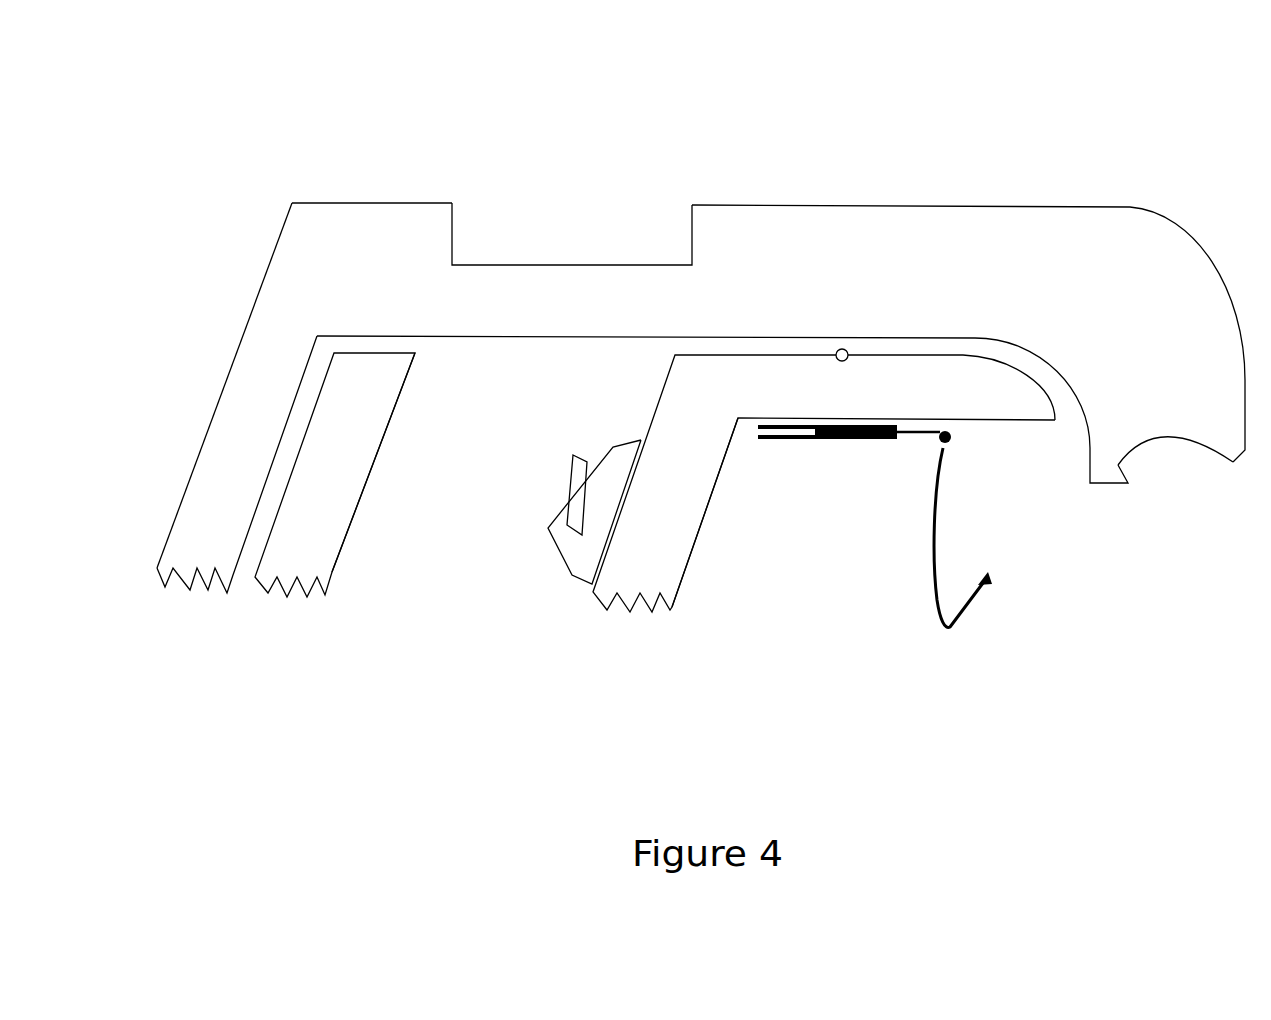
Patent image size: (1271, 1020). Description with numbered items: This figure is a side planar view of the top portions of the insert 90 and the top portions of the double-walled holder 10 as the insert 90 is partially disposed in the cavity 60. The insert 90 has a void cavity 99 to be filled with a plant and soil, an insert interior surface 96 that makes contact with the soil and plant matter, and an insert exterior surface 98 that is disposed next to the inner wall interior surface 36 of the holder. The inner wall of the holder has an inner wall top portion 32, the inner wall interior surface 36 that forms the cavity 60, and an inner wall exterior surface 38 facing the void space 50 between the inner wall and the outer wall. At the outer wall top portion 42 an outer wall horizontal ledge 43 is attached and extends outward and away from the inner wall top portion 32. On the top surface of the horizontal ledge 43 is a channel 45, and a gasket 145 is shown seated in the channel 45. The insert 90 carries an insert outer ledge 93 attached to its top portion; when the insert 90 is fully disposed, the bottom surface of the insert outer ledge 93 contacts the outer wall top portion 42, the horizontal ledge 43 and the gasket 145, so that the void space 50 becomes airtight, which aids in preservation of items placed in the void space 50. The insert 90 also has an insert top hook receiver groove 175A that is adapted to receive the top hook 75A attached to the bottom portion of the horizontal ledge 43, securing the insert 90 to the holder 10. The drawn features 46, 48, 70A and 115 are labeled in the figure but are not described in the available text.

The double-walled holder 10 is at (1055, 422).
The inner wall top portion 32 is at (381, 443).
The inner wall interior surface 36 is at (403, 385).
The inner wall exterior surface 38 is at (320, 383).
The outer wall top portion 42 is at (661, 397).
The outer wall horizontal ledge 43 is at (912, 345).
The channel 45 is at (830, 363).
The clip 46 is at (647, 438).
The slanted wall 48 is at (718, 477).
The void space 50 is at (463, 455).
The cavity 60 is at (260, 512).
The clip slot 70A is at (583, 588).
The top hook 75A is at (953, 630).
The insert 90 is at (237, 343).
The insert outer ledge 93 is at (975, 205).
The insert interior surface 96 is at (178, 503).
The insert exterior surface 98 is at (247, 537).
The void cavity 99 is at (140, 340).
The notch 115 is at (563, 257).
The gasket 145 is at (843, 358).
The insert top hook receiver groove 175A is at (1160, 440).